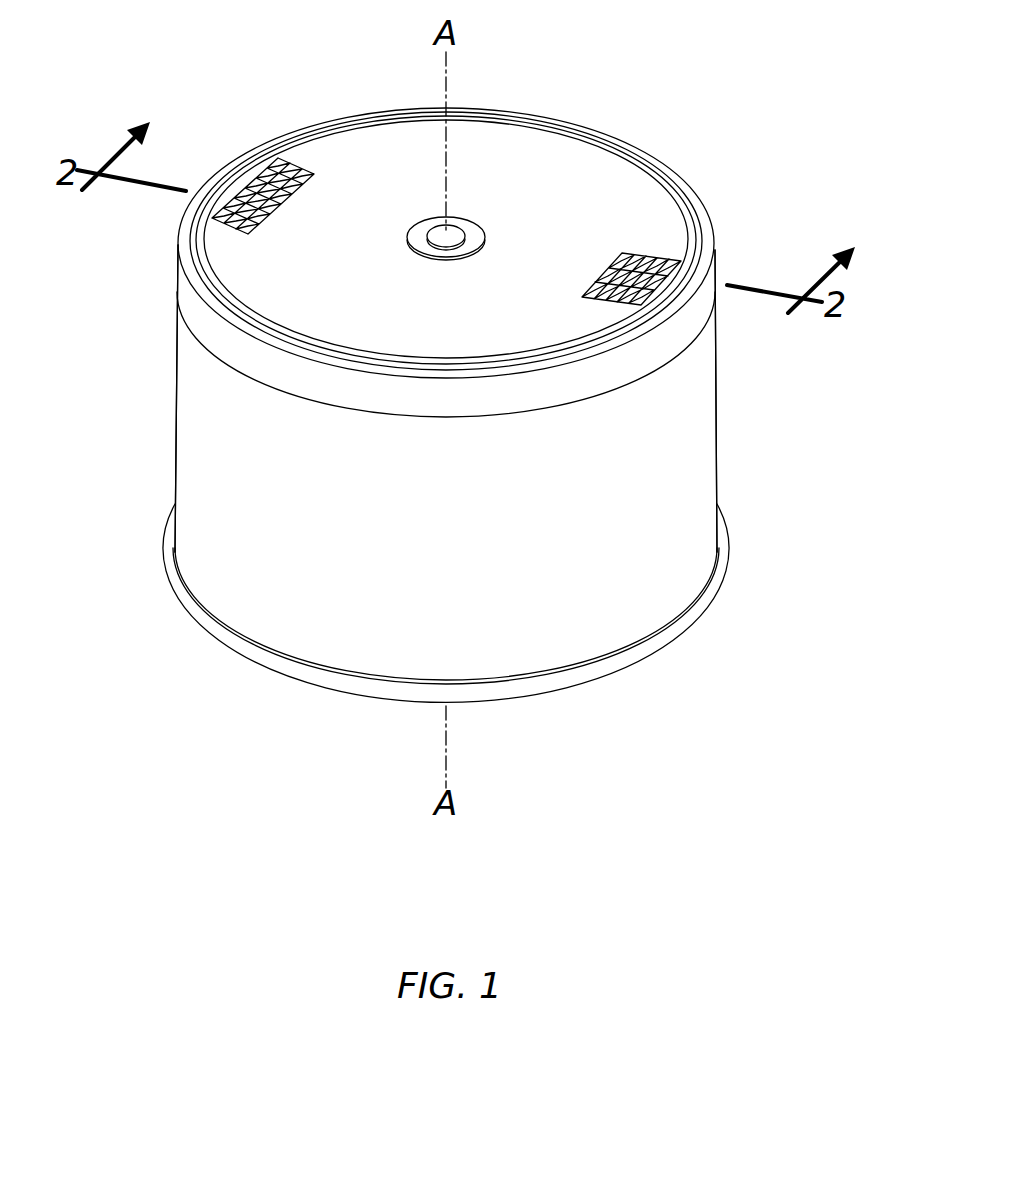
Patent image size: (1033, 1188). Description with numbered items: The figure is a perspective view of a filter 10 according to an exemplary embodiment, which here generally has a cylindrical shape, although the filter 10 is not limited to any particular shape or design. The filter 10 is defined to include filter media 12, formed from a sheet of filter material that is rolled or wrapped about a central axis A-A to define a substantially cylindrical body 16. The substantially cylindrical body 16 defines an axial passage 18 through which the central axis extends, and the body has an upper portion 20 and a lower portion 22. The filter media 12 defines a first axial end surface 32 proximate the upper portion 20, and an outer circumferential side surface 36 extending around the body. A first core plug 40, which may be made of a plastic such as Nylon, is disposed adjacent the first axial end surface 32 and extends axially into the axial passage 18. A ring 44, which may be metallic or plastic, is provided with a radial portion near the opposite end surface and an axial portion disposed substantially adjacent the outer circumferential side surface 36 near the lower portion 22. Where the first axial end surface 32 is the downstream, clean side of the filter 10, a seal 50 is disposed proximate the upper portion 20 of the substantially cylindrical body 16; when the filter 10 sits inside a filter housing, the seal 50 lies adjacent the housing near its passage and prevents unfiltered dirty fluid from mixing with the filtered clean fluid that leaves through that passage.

The filter 10 is at (728, 69).
The filter media 12 is at (279, 169).
The substantially cylindrical body 16 is at (156, 436).
The axial passage 18 is at (440, 231).
The upper portion 20 is at (727, 299).
The lower portion 22 is at (744, 553).
The first axial end surface 32 is at (456, 325).
The outer circumferential side surface 36 is at (454, 565).
The first core plug 40 is at (473, 236).
The ring 44 is at (279, 663).
The seal 50 is at (203, 318).